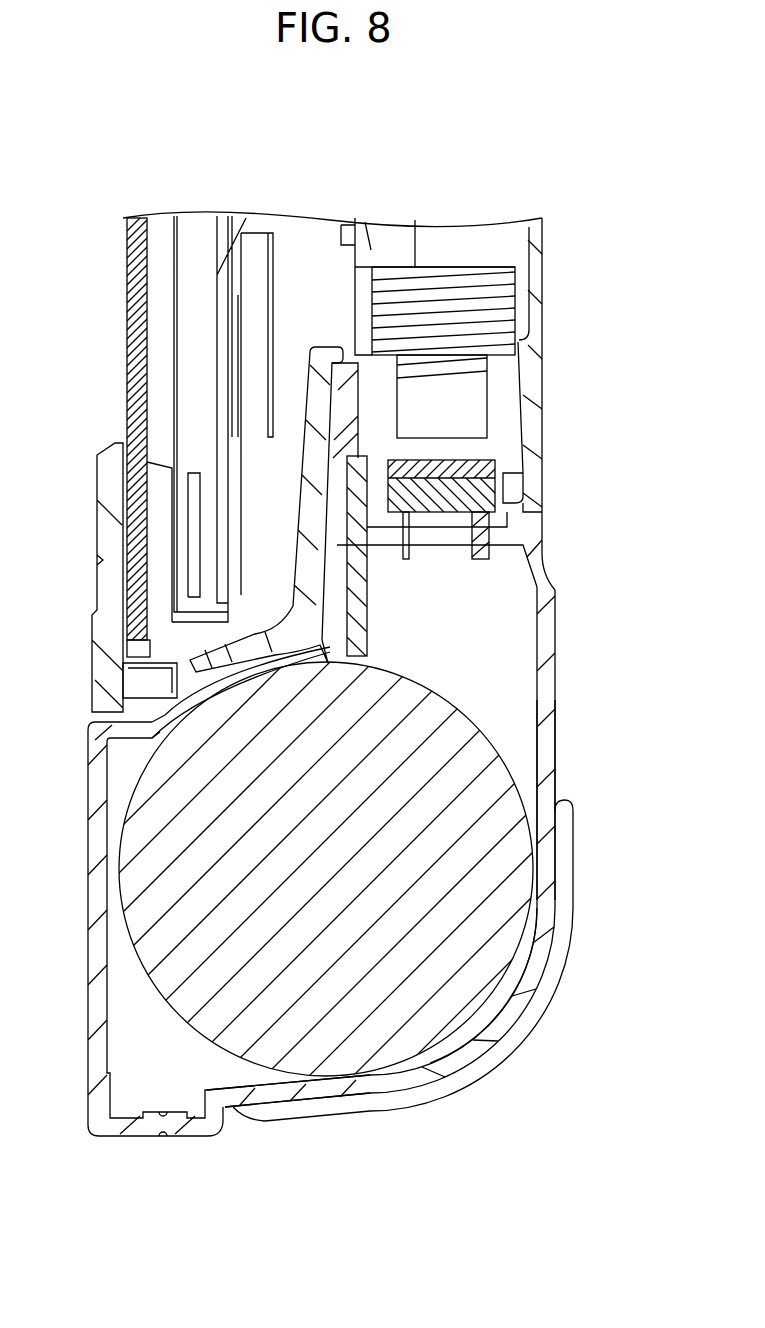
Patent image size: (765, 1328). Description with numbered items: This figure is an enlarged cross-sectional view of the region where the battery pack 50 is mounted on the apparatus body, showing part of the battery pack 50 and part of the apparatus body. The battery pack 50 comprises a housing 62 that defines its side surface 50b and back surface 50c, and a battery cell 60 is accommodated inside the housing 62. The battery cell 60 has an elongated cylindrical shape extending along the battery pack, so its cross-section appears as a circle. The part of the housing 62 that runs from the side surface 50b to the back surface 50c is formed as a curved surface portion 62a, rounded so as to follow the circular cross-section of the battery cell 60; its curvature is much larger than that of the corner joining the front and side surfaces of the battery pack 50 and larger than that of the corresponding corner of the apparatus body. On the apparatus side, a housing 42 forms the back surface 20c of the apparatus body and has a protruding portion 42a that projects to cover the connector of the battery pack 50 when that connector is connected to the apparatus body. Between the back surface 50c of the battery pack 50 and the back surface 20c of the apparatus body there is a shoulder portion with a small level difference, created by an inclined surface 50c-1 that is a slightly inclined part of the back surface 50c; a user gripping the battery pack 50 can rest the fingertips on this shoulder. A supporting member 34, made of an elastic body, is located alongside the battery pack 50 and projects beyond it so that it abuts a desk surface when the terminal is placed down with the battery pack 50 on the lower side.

The back surface of the apparatus body 20c is at (538, 273).
The housing 42 is at (528, 370).
The protruding portion 42a is at (533, 485).
The inclined surface 50c-1 is at (543, 557).
The housing 62 is at (546, 597).
The curved surface portion 62a is at (478, 1033).
The supporting member 34 is at (513, 1027).
The battery cell 60 is at (450, 912).
The battery pack 50 is at (84, 1165).
The side surface 50b is at (297, 1118).
The back surface 50c is at (572, 732).